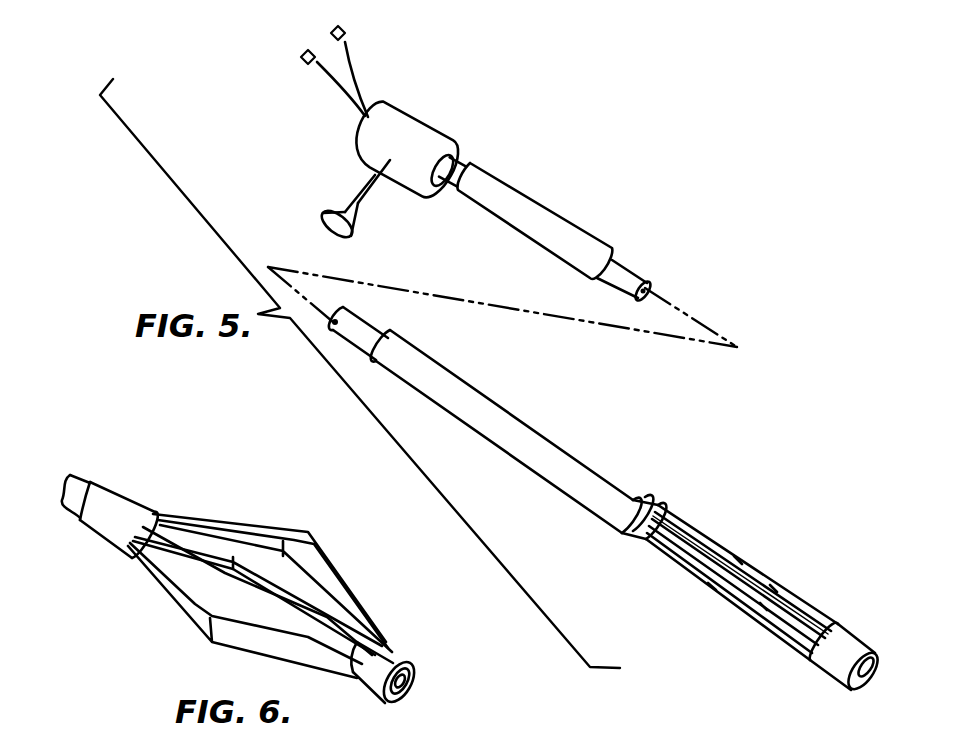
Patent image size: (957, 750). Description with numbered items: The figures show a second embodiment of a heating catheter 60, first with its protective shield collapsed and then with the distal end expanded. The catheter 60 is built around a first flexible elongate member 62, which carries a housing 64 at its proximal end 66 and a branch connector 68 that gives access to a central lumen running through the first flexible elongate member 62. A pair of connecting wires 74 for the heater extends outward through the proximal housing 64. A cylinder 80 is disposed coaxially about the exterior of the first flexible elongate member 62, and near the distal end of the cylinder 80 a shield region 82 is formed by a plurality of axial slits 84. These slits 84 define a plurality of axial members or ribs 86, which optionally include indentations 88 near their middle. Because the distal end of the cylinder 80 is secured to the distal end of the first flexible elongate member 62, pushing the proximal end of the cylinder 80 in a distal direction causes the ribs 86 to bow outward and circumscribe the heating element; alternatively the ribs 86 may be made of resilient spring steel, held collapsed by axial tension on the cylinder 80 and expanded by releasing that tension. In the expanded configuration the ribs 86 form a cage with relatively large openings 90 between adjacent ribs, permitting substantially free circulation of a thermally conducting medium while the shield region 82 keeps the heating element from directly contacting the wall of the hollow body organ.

In FIG. 5, the heating catheter 60 is at (752, 228).
In FIG. 5, the first flexible elongate member 62 is at (631, 278).
In FIG. 6, the first flexible elongate member 62 is at (78, 476).
In FIG. 5, the housing 64 is at (422, 128).
In FIG. 5, the proximal end 66 is at (443, 183).
In FIG. 5, the branch connector 68 is at (367, 193).
In FIG. 5, the connecting wires 74 is at (329, 64).
In FIG. 5, the cylinder 80 is at (560, 228).
In FIG. 6, the cylinder 80 is at (120, 495).
In FIG. 5, the shield region 82 is at (752, 582).
In FIG. 5, the axial slits 84 is at (682, 511).
In FIG. 5, the axial members or ribs 86 is at (787, 603).
In FIG. 6, the axial members or ribs 86 is at (280, 643).
In FIG. 5, the indentations 88 is at (728, 568).
In FIG. 6, the openings 90 is at (182, 556).